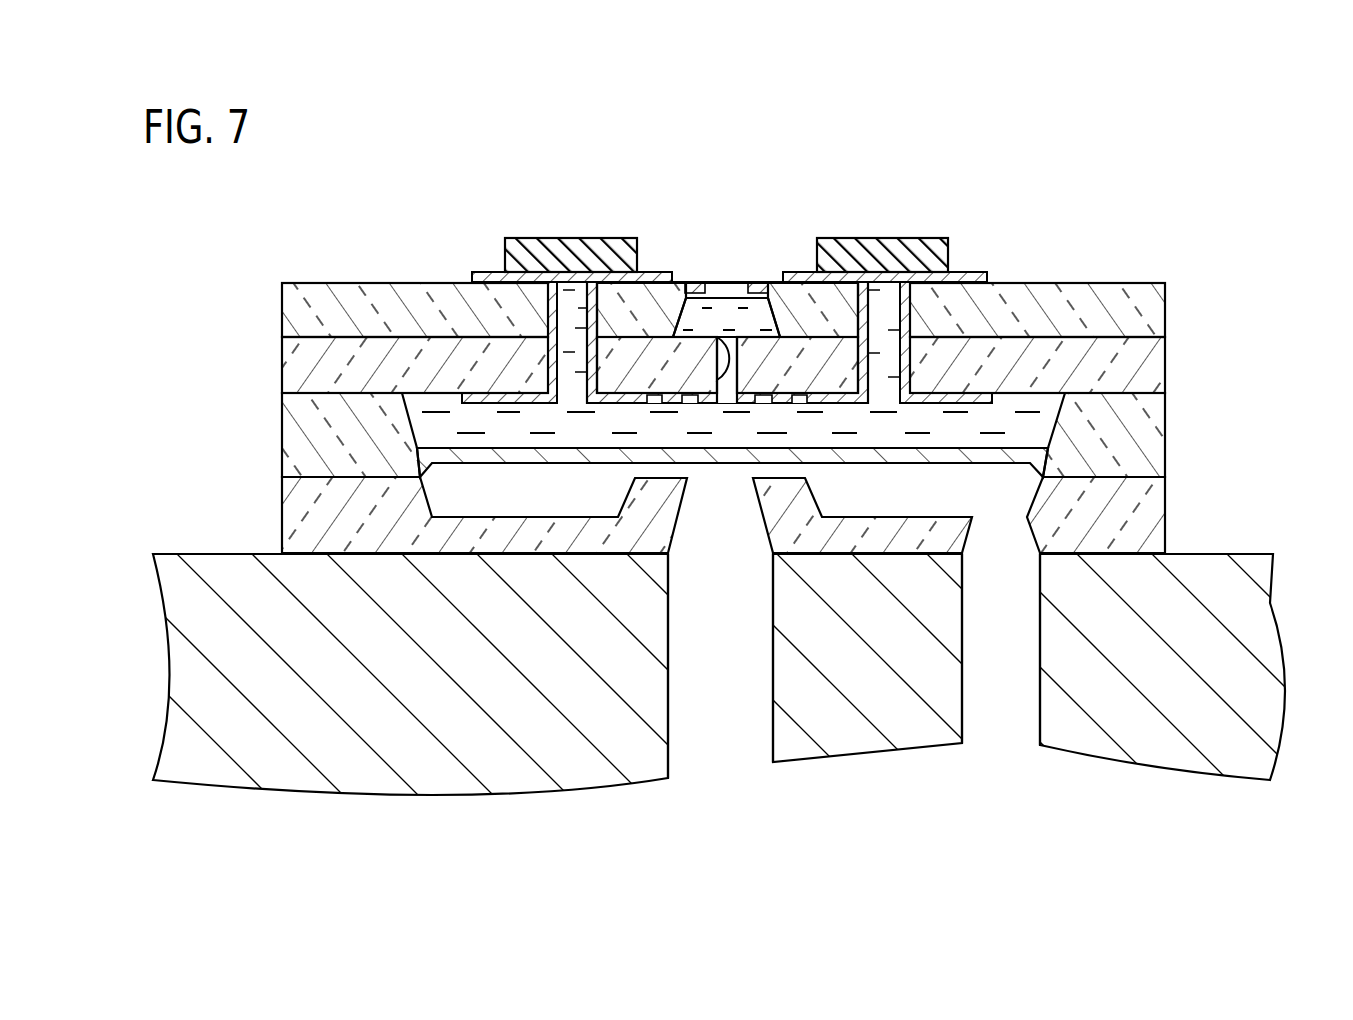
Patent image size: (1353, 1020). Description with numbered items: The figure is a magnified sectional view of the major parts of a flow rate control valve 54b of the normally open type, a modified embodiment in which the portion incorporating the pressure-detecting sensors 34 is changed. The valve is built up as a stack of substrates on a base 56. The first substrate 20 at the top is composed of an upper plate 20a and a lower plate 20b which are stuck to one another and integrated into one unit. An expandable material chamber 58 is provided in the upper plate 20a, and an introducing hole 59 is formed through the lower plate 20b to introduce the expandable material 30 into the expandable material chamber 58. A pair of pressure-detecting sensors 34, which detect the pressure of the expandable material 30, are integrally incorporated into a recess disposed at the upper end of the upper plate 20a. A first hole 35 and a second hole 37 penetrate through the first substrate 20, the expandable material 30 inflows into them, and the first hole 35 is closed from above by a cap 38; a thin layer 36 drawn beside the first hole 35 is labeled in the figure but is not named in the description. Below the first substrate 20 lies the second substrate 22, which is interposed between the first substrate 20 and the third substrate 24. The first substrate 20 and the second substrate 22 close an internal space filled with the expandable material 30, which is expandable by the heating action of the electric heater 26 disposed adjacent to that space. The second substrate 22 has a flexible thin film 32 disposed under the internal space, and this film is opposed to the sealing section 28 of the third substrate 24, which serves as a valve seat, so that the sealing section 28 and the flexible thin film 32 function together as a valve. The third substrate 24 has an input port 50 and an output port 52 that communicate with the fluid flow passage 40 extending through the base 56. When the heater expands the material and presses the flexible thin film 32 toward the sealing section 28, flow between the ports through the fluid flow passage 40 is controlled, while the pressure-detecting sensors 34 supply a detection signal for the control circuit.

The first substrate 20 is at (661, 338).
The upper plate 20a is at (307, 322).
The lower plate 20b is at (307, 369).
The second substrate 22 is at (307, 435).
The third substrate 24 is at (307, 523).
The electric heater 26 is at (702, 396).
The sealing section 28 is at (777, 480).
The expandable material 30 is at (445, 425).
The flexible thin film 32 is at (950, 458).
The pressure-detecting sensors 34 is at (762, 283).
The first hole 35 is at (558, 320).
The electrode 36 is at (483, 271).
The second hole 37 is at (893, 320).
The cap 38 is at (558, 248).
The fluid flow passage 40 is at (688, 680).
The input port 50 is at (718, 530).
The output port 52 is at (992, 540).
The flow rate control valve 54b is at (1073, 206).
The base 56 is at (1247, 545).
The expandable material chamber 58 is at (760, 310).
The introducing hole 59 is at (684, 318).